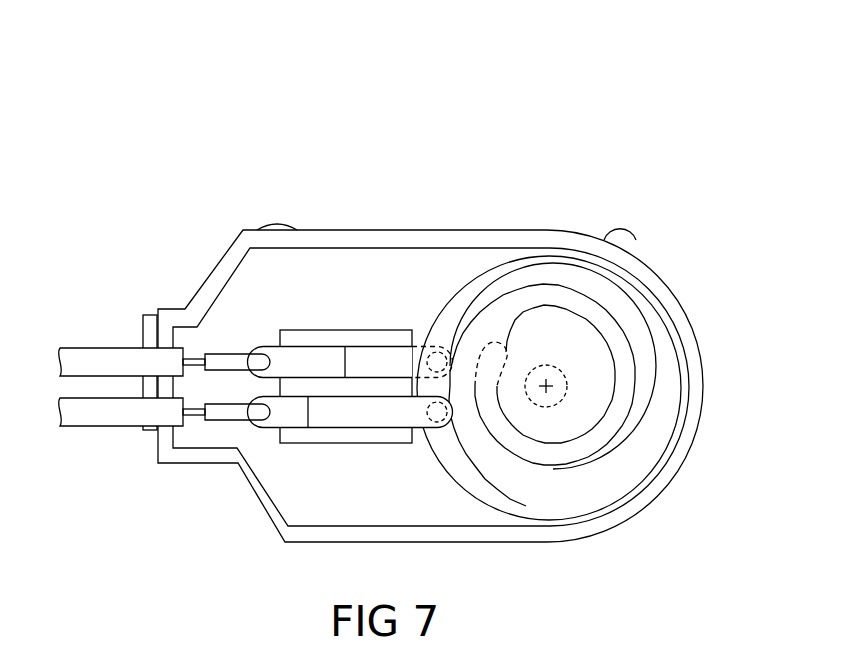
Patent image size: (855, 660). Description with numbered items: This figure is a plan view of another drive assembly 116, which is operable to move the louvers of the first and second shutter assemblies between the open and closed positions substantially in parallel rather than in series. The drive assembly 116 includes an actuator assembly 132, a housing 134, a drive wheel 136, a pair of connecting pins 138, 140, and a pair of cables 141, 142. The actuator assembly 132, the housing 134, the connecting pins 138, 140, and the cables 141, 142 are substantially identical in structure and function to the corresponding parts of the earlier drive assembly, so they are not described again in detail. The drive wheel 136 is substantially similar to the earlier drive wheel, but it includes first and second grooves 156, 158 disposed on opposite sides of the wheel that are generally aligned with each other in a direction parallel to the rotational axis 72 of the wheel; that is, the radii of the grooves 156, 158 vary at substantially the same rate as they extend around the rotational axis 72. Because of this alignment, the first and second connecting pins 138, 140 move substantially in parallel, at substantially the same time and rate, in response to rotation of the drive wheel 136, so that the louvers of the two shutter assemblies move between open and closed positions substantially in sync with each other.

The rotational axis 72 is at (550, 384).
The drive assembly 116 is at (366, 140).
The actuator assembly 132 is at (603, 133).
The housing 134 is at (493, 214).
The drive wheel 136 is at (464, 510).
The connecting pin 138 is at (294, 332).
The connecting pin 140 is at (330, 437).
The cable 141 is at (188, 340).
The cable 142 is at (190, 430).
The first groove 156 is at (487, 327).
The second groove 158 is at (586, 485).